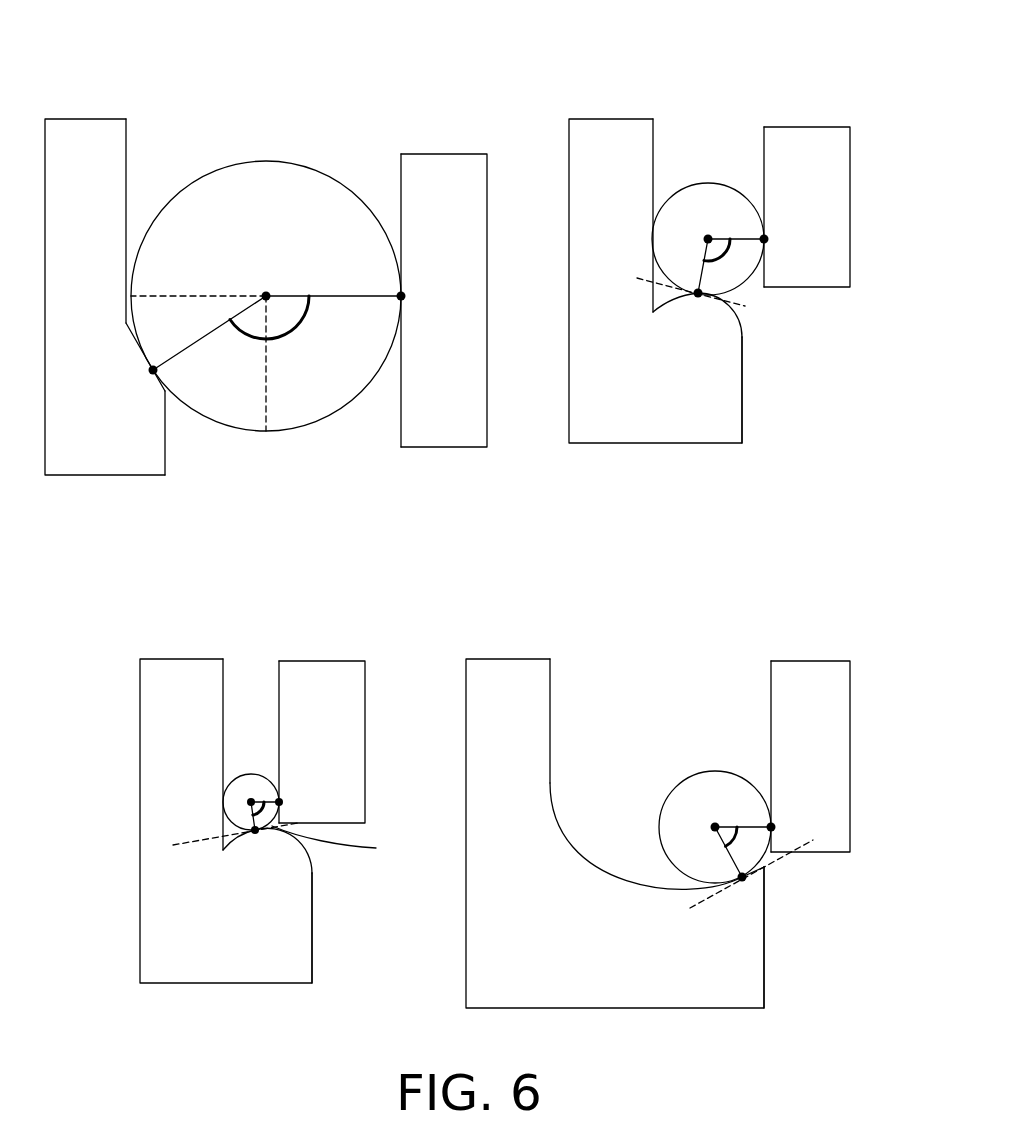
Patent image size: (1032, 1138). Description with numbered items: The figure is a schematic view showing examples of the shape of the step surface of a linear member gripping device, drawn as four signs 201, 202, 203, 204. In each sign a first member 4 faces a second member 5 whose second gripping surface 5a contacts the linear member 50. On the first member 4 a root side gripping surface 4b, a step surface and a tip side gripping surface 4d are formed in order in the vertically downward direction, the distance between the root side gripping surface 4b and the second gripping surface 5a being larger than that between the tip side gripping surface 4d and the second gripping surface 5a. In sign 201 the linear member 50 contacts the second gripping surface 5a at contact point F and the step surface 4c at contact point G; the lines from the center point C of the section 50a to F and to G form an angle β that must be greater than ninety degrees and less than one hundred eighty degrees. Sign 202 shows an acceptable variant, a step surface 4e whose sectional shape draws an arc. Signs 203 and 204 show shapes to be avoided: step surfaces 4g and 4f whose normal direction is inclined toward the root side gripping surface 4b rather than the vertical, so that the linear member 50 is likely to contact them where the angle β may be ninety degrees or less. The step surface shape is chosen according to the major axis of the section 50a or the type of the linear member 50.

The first arm member 4 is at (85, 118).
The root side gripping surface 4b is at (127, 143).
The step surface 4c is at (145, 352).
The tip side gripping surface 4d is at (163, 441).
The step surface 4e is at (723, 301).
The step surface 4f is at (617, 868).
The step surface 4g is at (300, 850).
The second arm member 5 is at (441, 160).
The second gripping surface 5a is at (401, 175).
The linear member 50 is at (492, 490).
The section 50a is at (316, 176).
The sign 201 is at (113, 67).
The sign 202 is at (574, 67).
The sign 203 is at (145, 599).
The sign 204 is at (478, 599).